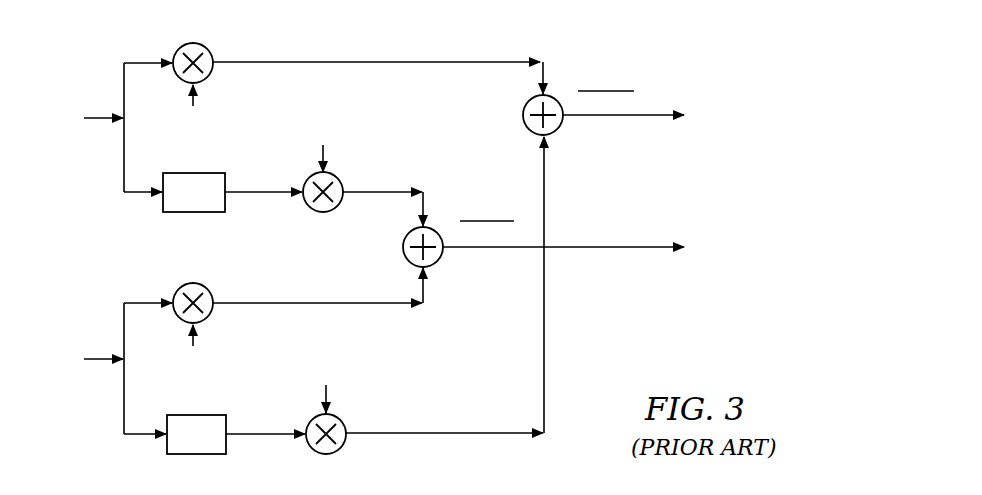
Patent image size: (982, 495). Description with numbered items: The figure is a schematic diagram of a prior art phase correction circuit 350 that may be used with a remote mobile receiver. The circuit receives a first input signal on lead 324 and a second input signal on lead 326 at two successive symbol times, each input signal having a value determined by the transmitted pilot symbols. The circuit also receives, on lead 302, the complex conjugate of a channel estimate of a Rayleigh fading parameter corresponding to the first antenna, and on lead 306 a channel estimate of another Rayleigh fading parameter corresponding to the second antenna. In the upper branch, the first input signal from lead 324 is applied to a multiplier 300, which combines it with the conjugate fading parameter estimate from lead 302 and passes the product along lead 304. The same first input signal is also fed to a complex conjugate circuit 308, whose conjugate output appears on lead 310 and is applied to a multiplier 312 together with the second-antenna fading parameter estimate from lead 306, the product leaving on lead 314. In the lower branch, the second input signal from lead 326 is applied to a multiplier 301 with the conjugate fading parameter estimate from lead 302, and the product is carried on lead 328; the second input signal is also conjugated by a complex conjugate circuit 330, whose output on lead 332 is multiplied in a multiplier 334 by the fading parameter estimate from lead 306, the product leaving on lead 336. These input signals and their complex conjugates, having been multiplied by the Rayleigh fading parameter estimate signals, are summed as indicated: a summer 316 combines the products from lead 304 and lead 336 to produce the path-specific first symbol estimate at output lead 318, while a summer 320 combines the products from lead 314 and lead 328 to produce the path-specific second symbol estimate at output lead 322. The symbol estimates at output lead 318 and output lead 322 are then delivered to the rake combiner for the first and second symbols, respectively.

The multiplier 300 is at (176, 52).
The multiplier 301 is at (176, 293).
The lead 302 is at (194, 104).
The multiplier output path 304 is at (267, 60).
The lead 306 is at (318, 160).
The complex conjugate circuit 308 is at (196, 214).
The lead 310 is at (259, 195).
The multiplier 312 is at (322, 214).
The multiplier output path 314 is at (378, 190).
The adder 316 is at (523, 116).
The output lead 318 is at (617, 117).
The adder 320 is at (440, 262).
The output lead 322 is at (592, 249).
The lead 324 is at (102, 121).
The lead 326 is at (102, 362).
The multiplier output path 328 is at (375, 305).
The complex conjugate circuit 330 is at (166, 442).
The conjugate output path 332 is at (262, 437).
The multiplier 334 is at (348, 444).
The multiplier output path 336 is at (440, 430).
The prior art STTD decoder 350 is at (612, 345).